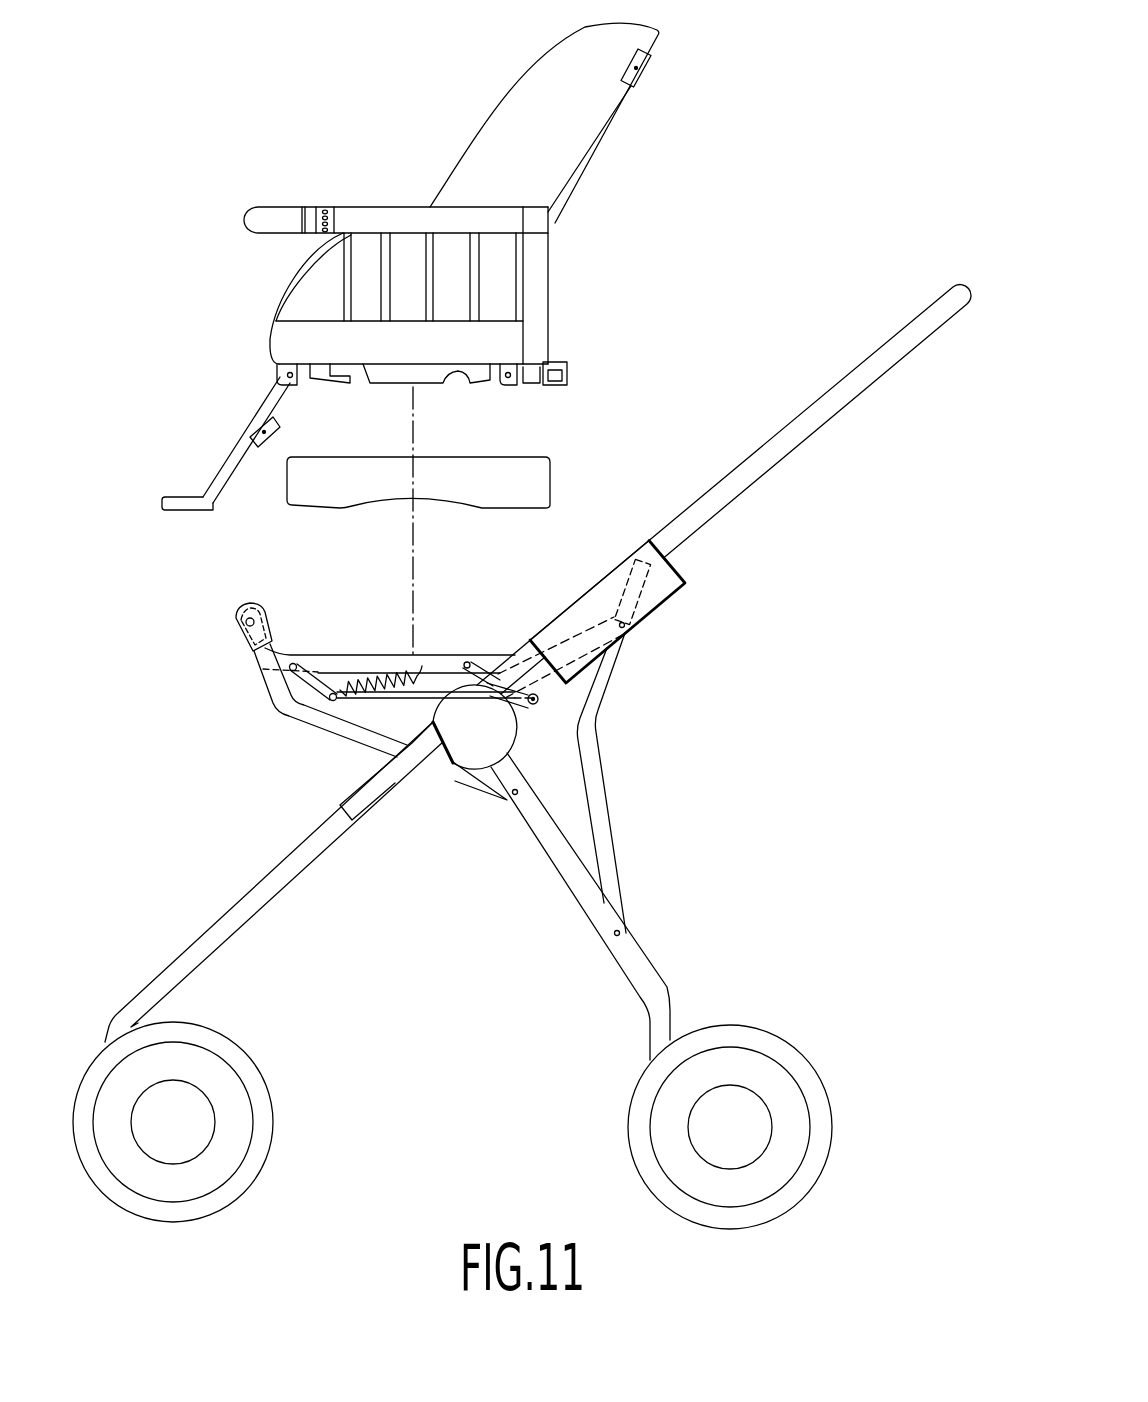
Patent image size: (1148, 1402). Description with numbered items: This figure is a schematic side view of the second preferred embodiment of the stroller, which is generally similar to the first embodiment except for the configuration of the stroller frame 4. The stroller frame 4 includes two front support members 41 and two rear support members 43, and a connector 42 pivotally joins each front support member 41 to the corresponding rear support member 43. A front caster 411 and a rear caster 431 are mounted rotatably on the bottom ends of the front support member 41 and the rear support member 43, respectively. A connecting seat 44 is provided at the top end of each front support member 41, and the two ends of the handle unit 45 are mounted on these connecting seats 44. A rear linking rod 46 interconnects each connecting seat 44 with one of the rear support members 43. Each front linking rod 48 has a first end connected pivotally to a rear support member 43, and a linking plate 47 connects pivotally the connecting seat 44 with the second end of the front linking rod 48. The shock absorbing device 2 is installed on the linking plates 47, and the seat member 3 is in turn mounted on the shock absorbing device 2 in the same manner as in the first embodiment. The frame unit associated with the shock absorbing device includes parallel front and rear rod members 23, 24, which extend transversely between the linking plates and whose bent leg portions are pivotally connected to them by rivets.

The shock absorbing device 2 is at (404, 702).
The seat member 3 is at (577, 211).
The stroller frame 4 is at (522, 756).
The front rod member 23 is at (335, 710).
The rear rod member 24 is at (533, 706).
The front support member 41 is at (300, 877).
The front caster 411 is at (230, 1050).
The connector 42 is at (472, 747).
The rear support member 43 is at (583, 902).
The rear caster 431 is at (647, 1097).
The connecting seat 44 is at (604, 567).
The handle unit 45 is at (743, 463).
The rear linking rod 46 is at (600, 793).
The linking plate 47 is at (365, 655).
The front linking rod 48 is at (292, 716).